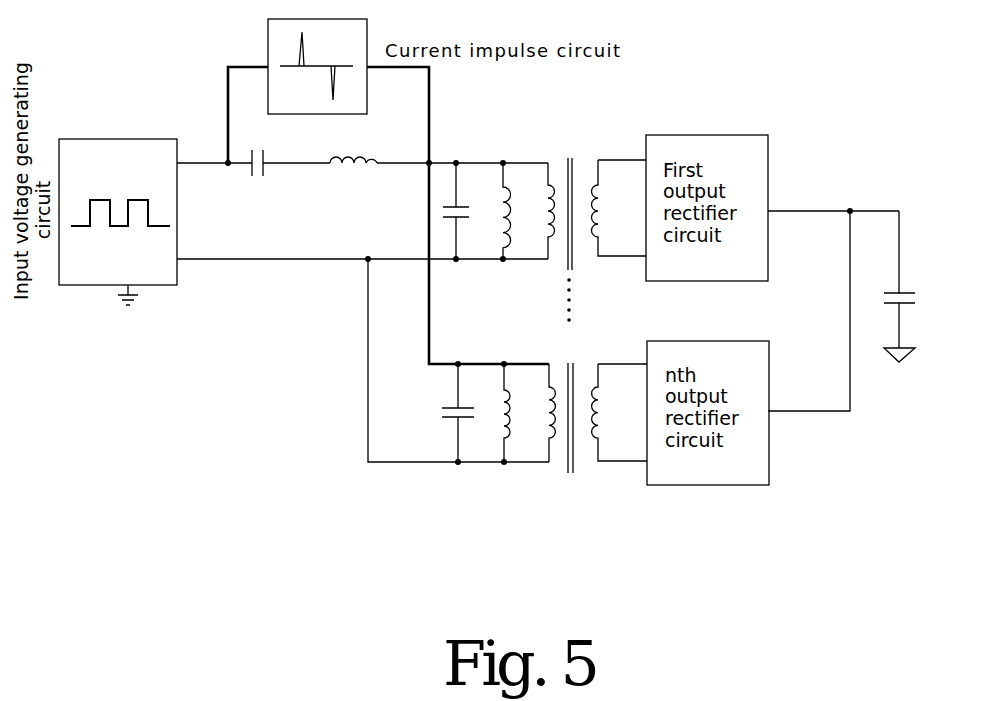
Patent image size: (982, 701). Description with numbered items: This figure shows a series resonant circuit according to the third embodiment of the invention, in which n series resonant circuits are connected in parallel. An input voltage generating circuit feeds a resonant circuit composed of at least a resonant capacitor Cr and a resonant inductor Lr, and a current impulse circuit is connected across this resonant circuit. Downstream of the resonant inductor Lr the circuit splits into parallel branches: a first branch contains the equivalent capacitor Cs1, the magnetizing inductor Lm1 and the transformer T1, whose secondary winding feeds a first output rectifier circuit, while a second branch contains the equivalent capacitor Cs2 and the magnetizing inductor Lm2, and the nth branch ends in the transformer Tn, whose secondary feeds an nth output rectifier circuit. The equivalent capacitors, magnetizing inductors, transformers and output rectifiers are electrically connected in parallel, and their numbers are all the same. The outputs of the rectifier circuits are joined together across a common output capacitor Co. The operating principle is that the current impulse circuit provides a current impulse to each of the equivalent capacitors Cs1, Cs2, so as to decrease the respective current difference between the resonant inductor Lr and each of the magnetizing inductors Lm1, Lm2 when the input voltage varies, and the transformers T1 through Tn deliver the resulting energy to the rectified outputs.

The resonant capacitor Cr is at (255, 176).
The resonant inductor Lr is at (353, 180).
The equivalent capacitor Cs1 is at (433, 211).
The magnetizing inductor Lm1 is at (492, 211).
The transformer T1 is at (589, 187).
The equivalent capacitor Cs2 is at (438, 413).
The magnetizing inductor Lm2 is at (492, 413).
The transformer Tn is at (591, 423).
The output capacitor Co is at (907, 286).